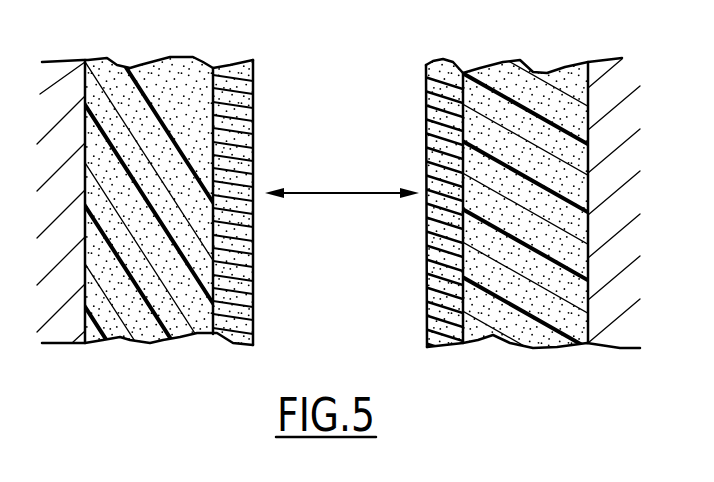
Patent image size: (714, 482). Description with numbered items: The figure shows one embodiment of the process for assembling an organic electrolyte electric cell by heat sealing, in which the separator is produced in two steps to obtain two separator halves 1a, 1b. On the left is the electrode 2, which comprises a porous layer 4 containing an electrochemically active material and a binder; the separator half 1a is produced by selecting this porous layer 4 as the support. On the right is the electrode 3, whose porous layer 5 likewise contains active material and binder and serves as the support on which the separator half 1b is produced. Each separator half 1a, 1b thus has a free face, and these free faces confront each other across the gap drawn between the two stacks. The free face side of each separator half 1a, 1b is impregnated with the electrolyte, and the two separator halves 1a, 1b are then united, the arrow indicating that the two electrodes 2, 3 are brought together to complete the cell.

The separator half 1a is at (238, 93).
The separator half 1b is at (447, 70).
The electrode 2 is at (169, 241).
The electrode 3 is at (516, 215).
The porous layer 4 is at (148, 93).
The porous layer 5 is at (530, 97).